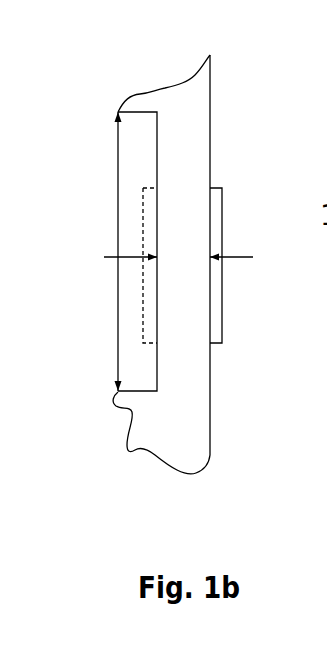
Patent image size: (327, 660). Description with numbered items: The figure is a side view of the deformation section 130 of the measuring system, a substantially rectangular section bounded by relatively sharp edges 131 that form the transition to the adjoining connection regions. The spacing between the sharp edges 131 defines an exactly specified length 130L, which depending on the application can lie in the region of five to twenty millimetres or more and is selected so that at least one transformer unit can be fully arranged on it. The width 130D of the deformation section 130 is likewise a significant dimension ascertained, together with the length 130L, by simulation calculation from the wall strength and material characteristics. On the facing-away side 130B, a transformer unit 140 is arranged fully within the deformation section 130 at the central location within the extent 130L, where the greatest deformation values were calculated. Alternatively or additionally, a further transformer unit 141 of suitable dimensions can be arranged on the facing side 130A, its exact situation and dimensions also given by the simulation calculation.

The deformation section 130 is at (91, 72).
The sharp edges 131 is at (180, 98).
The length 130L is at (116, 160).
The facing side 130A is at (151, 303).
The facing-away side 130B is at (216, 371).
The width 130D is at (233, 258).
The transformer unit 140 is at (225, 207).
The further transformer unit 141 is at (143, 218).